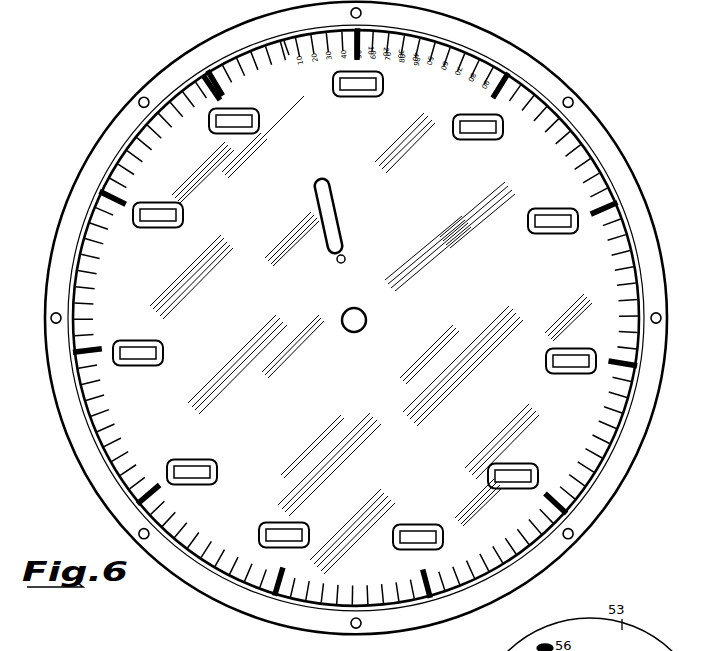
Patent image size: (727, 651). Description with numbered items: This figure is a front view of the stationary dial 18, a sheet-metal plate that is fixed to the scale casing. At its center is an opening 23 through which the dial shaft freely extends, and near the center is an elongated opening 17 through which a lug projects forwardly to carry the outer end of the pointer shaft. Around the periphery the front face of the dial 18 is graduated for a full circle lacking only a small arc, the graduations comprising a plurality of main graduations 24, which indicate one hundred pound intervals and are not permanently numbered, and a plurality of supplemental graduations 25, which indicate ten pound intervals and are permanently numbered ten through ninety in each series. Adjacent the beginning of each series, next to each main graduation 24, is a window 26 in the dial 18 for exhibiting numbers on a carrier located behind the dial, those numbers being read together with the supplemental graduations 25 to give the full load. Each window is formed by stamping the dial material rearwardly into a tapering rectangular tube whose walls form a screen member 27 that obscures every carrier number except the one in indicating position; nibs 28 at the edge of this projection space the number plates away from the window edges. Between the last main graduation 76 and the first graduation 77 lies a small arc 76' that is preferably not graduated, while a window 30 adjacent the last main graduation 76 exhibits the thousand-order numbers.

The elongated opening 17 is at (336, 232).
The stationary dial 18 is at (371, 335).
The central opening 23 is at (356, 312).
The main graduations 24 is at (596, 230).
The supplemental graduations 25 is at (627, 291).
The window 26 is at (479, 134).
The screen member 27 is at (418, 536).
The window 28 is at (248, 127).
The window 30 is at (366, 90).
The last main graduation 76 is at (228, 87).
The small arc 76' is at (287, 60).
The first graduation 77 is at (355, 52).